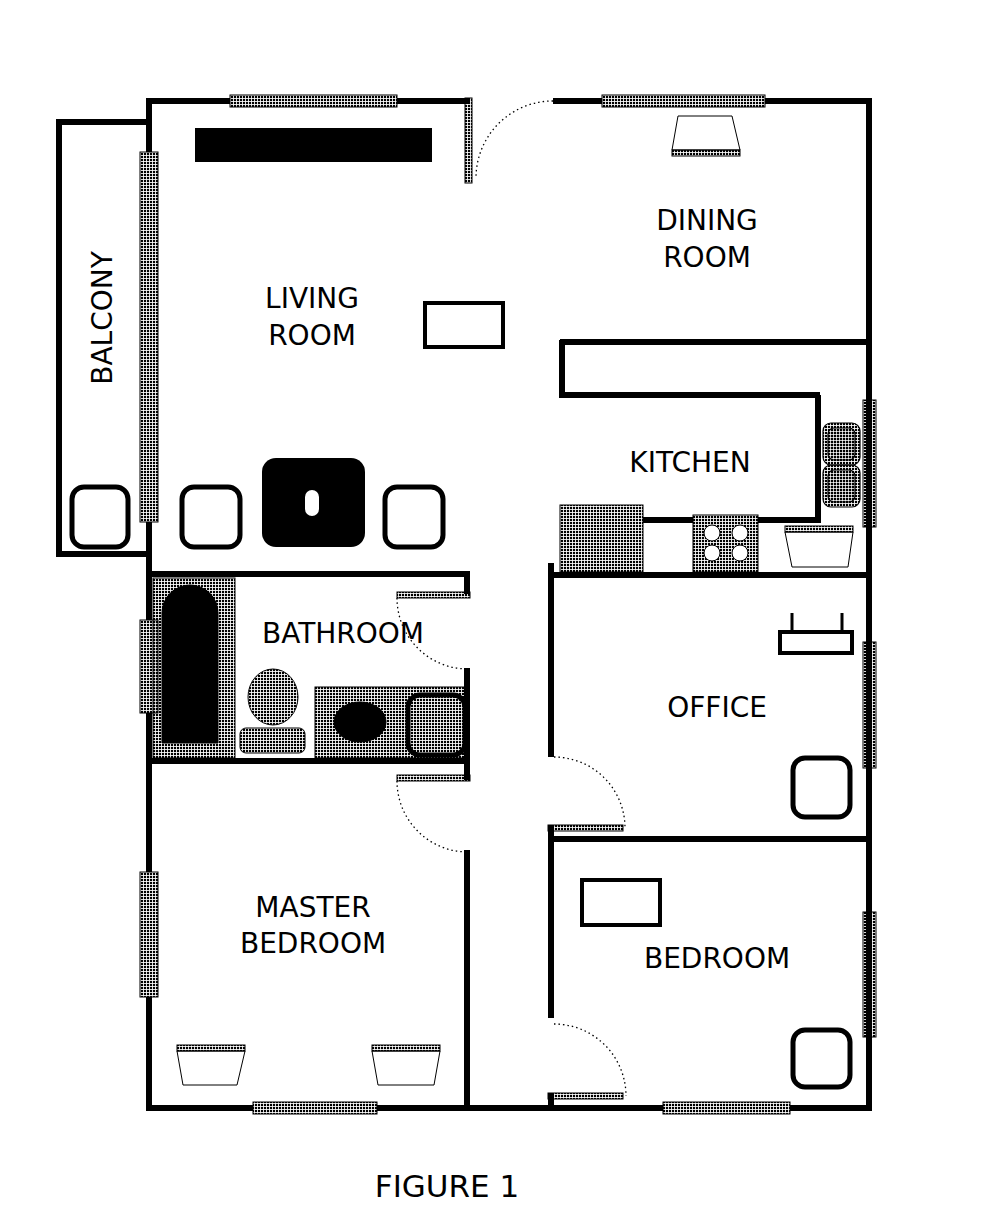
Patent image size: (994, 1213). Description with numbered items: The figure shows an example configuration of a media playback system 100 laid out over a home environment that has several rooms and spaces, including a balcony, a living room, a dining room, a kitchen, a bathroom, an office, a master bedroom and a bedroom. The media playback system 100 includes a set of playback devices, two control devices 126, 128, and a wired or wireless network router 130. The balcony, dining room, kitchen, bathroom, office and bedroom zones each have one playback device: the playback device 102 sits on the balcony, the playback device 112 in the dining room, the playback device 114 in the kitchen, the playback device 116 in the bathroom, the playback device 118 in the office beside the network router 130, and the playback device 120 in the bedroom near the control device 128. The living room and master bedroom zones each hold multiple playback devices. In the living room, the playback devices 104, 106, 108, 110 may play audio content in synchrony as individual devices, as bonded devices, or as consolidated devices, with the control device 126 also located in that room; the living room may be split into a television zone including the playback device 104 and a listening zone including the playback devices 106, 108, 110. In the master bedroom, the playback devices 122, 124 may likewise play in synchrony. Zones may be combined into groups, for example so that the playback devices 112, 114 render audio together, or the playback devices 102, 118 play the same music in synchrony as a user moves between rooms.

The media playback system 100 is at (558, 60).
The playback device 102 is at (83, 527).
The playback device 104 is at (296, 152).
The playback device 106 is at (194, 527).
The playback device 108 is at (397, 527).
The playback device 110 is at (296, 488).
The playback device 112 is at (688, 147).
The playback device 114 is at (803, 562).
The playback device 116 is at (420, 735).
The playback device 118 is at (805, 798).
The playback device 120 is at (805, 1069).
The playback device 122 is at (194, 1080).
The playback device 124 is at (389, 1080).
The control device 126 is at (447, 336).
The control device 128 is at (604, 914).
The network router 130 is at (778, 645).